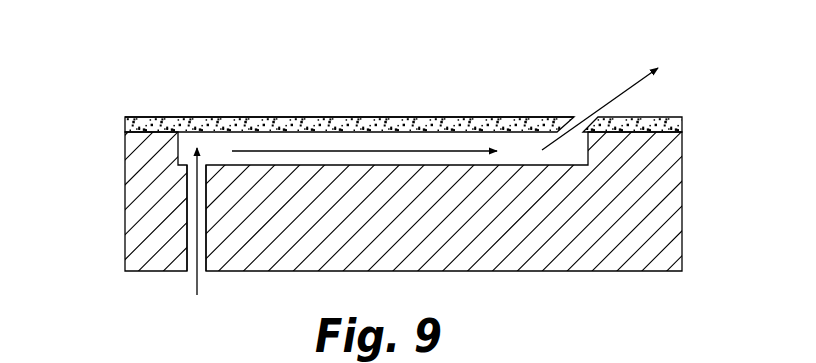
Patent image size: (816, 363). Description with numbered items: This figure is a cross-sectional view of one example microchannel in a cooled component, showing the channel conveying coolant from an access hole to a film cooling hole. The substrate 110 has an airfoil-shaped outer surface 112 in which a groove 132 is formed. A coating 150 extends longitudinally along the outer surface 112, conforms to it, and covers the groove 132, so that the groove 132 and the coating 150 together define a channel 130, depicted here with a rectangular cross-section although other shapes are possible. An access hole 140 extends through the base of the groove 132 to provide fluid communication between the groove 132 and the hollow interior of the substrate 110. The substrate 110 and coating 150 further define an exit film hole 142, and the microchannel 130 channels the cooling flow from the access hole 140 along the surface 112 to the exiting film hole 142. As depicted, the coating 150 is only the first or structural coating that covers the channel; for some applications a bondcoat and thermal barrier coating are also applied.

The substrate 110 is at (662, 213).
The airfoil-shaped outer surface 112 is at (138, 140).
The channel 130 is at (403, 100).
The groove 132 is at (310, 147).
The access hole 140 is at (186, 218).
The exit film hole 142 is at (580, 117).
The coating 150 is at (166, 126).